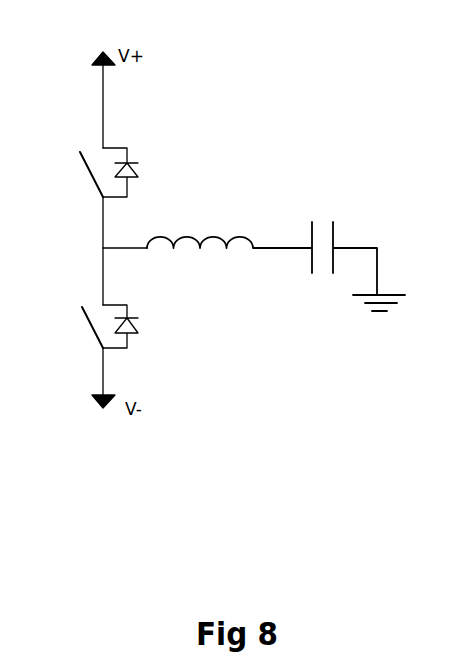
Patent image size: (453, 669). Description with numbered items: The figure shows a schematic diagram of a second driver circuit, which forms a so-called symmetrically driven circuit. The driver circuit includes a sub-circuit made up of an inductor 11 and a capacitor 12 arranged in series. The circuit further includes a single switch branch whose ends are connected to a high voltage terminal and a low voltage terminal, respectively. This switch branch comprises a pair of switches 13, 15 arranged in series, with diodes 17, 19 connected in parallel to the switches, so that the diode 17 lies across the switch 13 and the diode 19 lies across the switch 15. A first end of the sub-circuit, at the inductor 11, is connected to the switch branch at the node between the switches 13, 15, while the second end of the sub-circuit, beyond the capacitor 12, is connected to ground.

The inductor 11 is at (197, 223).
The capacitor 12 is at (323, 202).
The switch 13 is at (92, 160).
The switch 15 is at (87, 328).
The diode 17 is at (133, 153).
The diode 19 is at (130, 335).